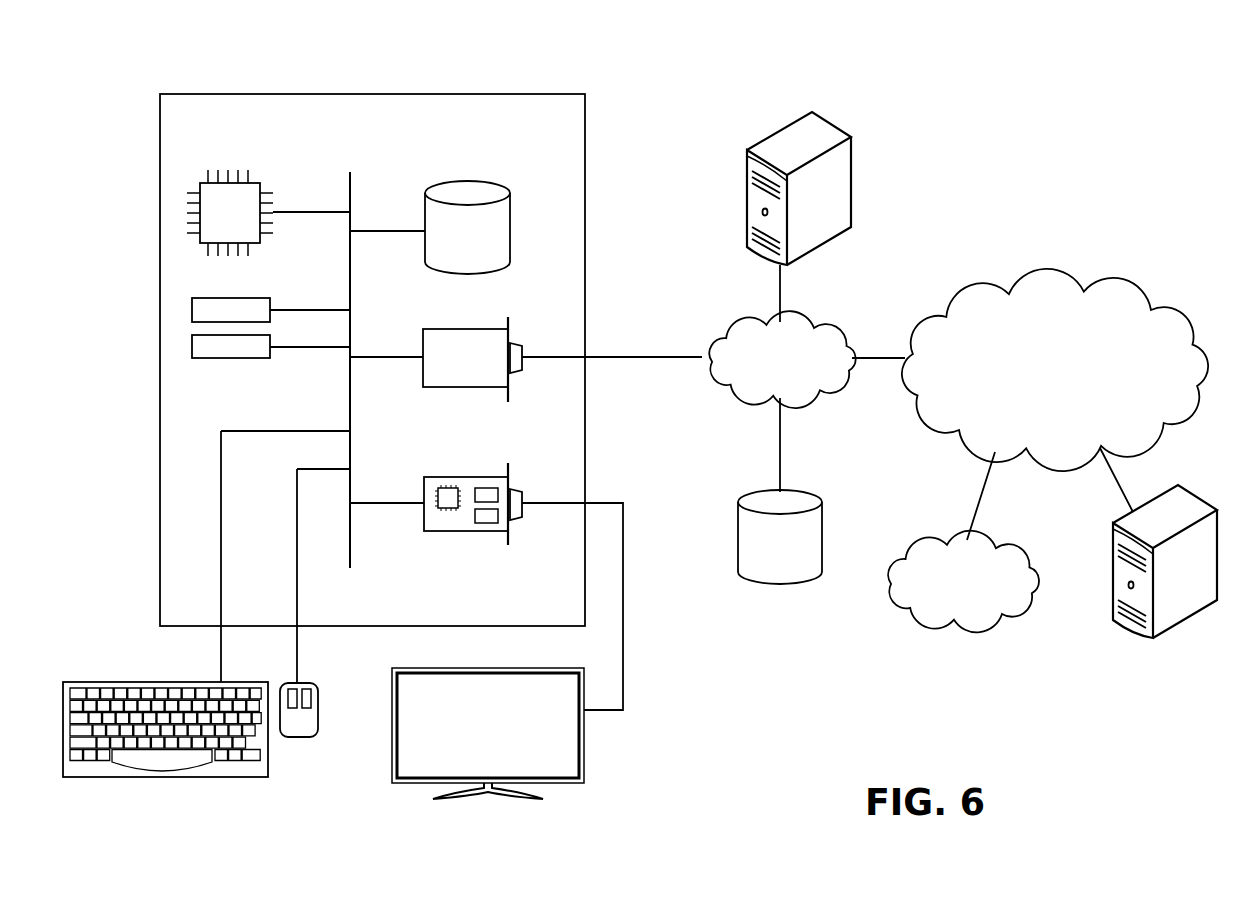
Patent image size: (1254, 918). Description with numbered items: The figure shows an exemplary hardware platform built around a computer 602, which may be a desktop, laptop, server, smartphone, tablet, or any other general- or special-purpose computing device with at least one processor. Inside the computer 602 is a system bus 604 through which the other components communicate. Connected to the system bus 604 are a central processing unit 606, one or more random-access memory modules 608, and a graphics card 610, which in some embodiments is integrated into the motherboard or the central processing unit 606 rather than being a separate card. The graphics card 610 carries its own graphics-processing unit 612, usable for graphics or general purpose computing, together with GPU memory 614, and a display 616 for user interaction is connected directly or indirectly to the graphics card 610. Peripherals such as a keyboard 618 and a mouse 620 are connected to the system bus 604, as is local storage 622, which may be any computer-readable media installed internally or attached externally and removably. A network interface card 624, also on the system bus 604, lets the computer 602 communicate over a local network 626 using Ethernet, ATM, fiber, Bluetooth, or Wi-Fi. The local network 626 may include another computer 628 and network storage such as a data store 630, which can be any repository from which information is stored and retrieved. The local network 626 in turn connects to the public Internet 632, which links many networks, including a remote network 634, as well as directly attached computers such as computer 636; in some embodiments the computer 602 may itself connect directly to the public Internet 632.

The computer 602 is at (540, 93).
The system bus 604 is at (352, 180).
The central processing unit 606 is at (253, 178).
The random-access memory modules 608 is at (272, 342).
The graphics card 610 is at (423, 487).
The graphics-processing unit 612 is at (447, 508).
The GPU memory 614 is at (483, 523).
The display 616 is at (584, 763).
The keyboard 618 is at (168, 777).
The mouse 620 is at (297, 737).
The local storage 622 is at (512, 212).
The network interface card 624 is at (423, 338).
The local network 626 is at (835, 313).
The computer 628 is at (835, 122).
The data store 630 is at (813, 492).
The public Internet 632 is at (1097, 280).
The remote network 634 is at (1017, 537).
The computer 636 is at (1193, 493).